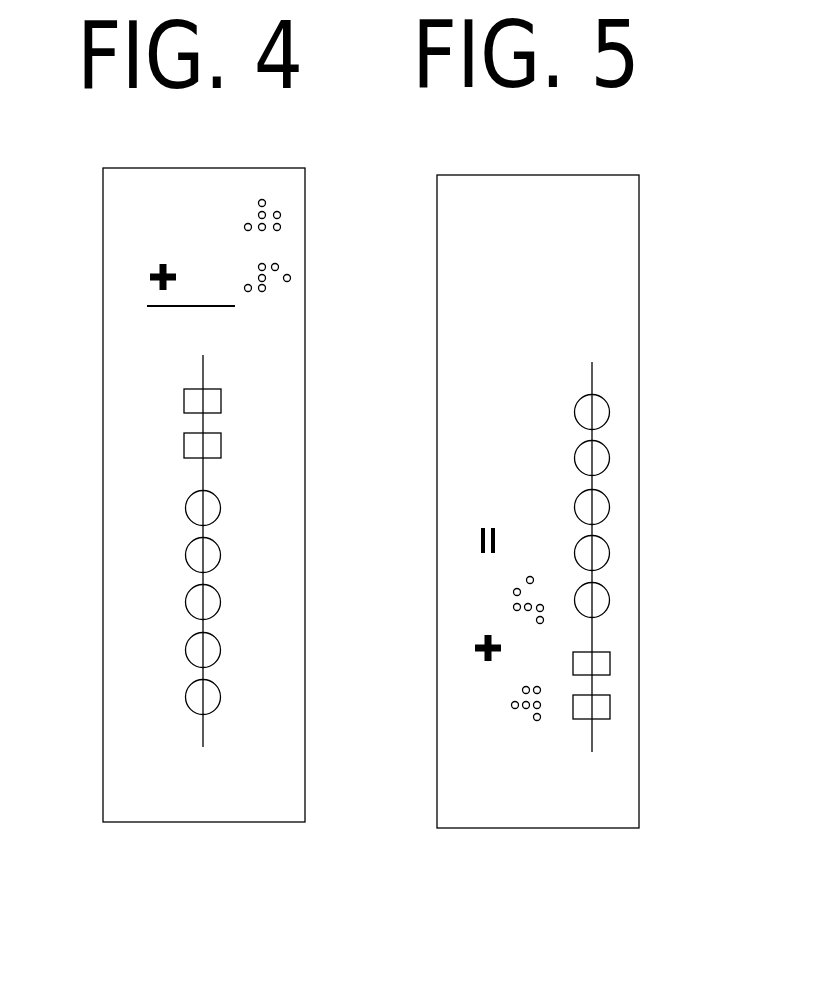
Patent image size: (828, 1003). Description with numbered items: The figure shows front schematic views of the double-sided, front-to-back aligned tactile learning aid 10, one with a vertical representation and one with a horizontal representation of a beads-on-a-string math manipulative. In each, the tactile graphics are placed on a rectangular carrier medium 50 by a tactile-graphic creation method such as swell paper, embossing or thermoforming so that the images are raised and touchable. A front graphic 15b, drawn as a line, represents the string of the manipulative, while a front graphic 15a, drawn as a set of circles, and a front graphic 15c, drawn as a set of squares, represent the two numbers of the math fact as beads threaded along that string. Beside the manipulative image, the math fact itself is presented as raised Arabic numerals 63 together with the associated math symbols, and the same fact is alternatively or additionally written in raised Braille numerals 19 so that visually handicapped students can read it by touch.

In FIG. 4, the double-sided, front-to-back aligned tactile learning aid 10 is at (70, 158).
In FIG. 5, the double-sided, front-to-back aligned tactile learning aid 10 is at (654, 159).
In FIG. 4, the carrier medium 50 is at (203, 822).
In FIG. 5, the carrier medium 50 is at (437, 217).
In FIG. 4, the raised Arabic numerals 63 is at (163, 290).
In FIG. 5, the raised Arabic numerals 63 is at (480, 727).
In FIG. 4, the raised Braille numerals 19 is at (277, 227).
In FIG. 5, the raised Braille numerals 19 is at (537, 720).
In FIG. 4, the front graphic 15a is at (217, 610).
In FIG. 5, the front graphic 15a is at (608, 412).
In FIG. 4, the front graphic 15b is at (200, 577).
In FIG. 5, the front graphic 15b is at (592, 735).
In FIG. 4, the front graphic 15c is at (221, 403).
In FIG. 5, the front graphic 15c is at (610, 663).